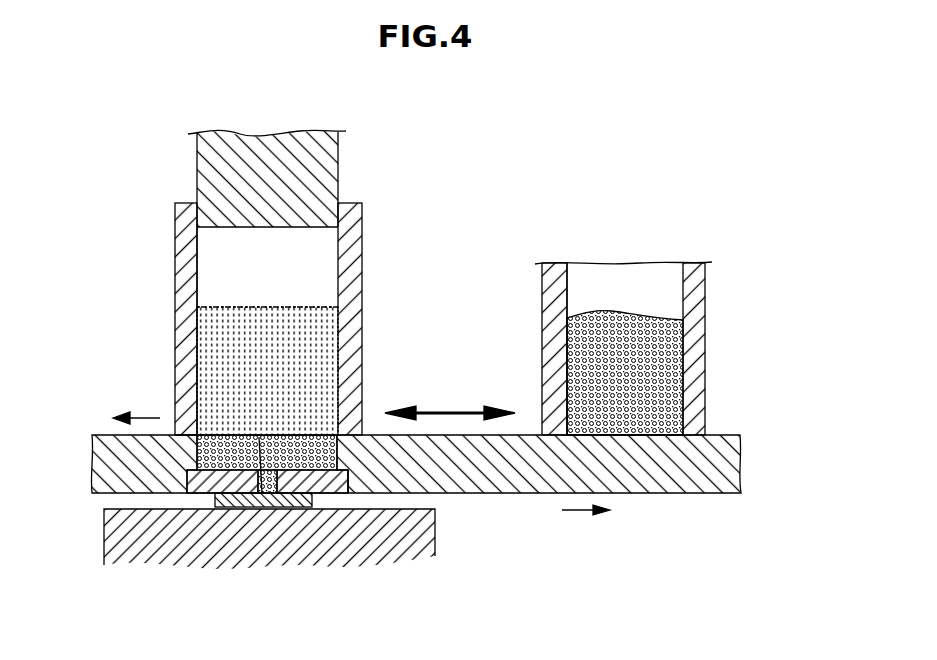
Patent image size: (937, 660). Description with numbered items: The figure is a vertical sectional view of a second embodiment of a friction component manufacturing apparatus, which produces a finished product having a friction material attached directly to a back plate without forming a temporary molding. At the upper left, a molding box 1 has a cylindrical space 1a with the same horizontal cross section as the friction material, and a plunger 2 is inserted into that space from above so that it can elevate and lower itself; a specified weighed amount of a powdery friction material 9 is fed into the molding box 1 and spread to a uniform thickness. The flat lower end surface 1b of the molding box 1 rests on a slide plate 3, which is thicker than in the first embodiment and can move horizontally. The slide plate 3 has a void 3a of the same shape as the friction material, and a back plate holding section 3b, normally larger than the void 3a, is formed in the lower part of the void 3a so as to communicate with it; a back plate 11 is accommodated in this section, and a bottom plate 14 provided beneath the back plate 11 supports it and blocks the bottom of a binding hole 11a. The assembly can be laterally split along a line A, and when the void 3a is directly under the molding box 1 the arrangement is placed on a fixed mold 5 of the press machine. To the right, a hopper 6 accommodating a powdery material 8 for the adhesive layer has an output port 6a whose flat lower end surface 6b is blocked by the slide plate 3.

The molding box 1 is at (352, 262).
The cylindrical space 1a is at (217, 277).
The lower end surface 1b is at (151, 458).
The plunger 2 is at (318, 168).
The slide plate 3 is at (666, 468).
The void 3a is at (203, 447).
The back plate holding section 3b is at (337, 493).
The fixed mold 5 is at (433, 548).
The hopper 6 is at (700, 292).
The output port 6a is at (549, 382).
The lower end surface 6b is at (718, 462).
The powdery material 8 is at (300, 437).
The powdery friction material 9 is at (298, 338).
The back plate 11 is at (186, 487).
The binding hole 11a is at (266, 500).
The bottom plate 14 is at (222, 506).
The line A is at (259, 437).